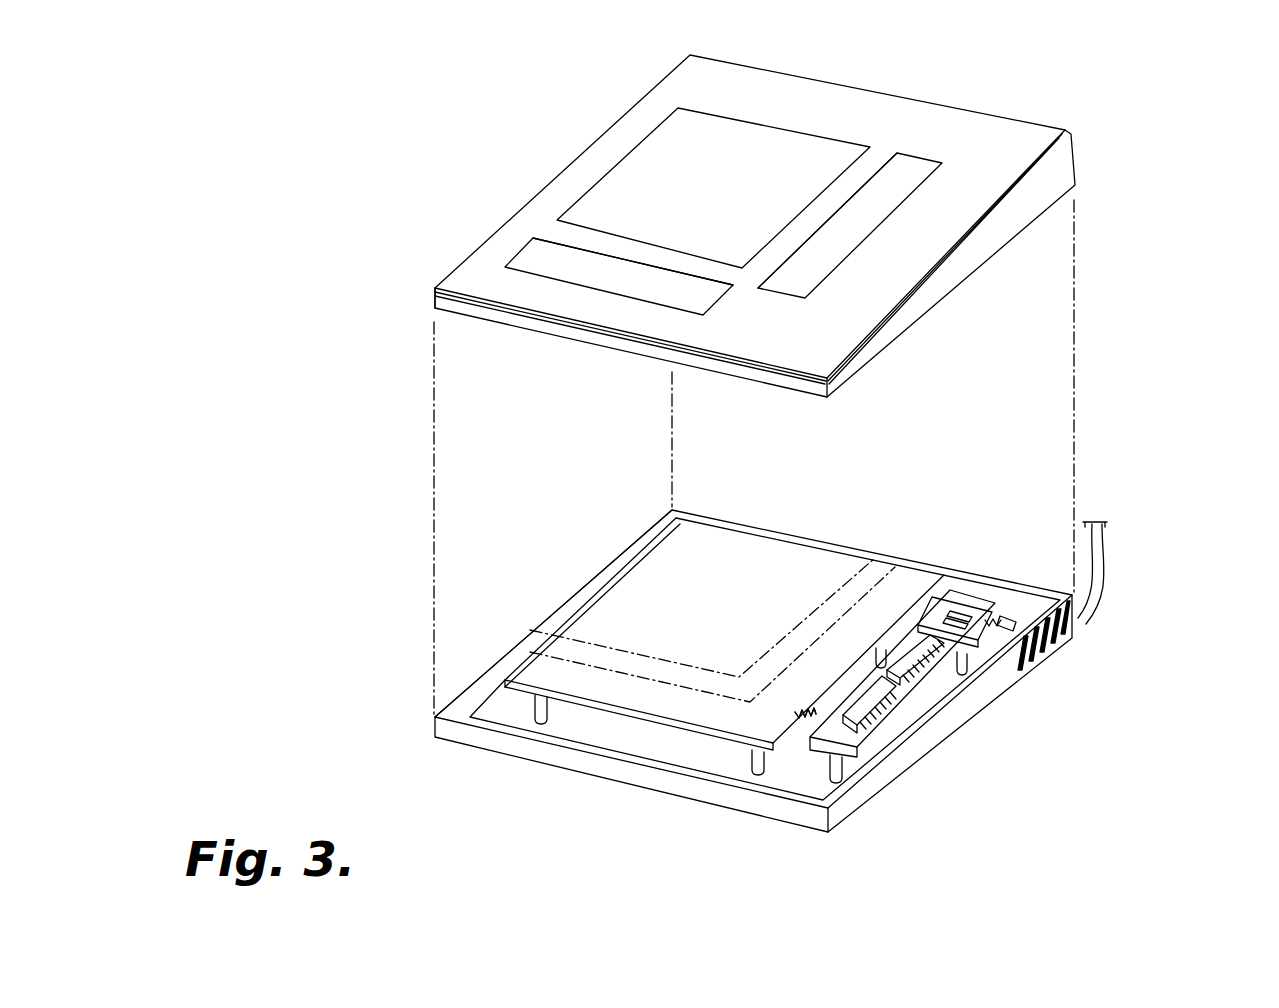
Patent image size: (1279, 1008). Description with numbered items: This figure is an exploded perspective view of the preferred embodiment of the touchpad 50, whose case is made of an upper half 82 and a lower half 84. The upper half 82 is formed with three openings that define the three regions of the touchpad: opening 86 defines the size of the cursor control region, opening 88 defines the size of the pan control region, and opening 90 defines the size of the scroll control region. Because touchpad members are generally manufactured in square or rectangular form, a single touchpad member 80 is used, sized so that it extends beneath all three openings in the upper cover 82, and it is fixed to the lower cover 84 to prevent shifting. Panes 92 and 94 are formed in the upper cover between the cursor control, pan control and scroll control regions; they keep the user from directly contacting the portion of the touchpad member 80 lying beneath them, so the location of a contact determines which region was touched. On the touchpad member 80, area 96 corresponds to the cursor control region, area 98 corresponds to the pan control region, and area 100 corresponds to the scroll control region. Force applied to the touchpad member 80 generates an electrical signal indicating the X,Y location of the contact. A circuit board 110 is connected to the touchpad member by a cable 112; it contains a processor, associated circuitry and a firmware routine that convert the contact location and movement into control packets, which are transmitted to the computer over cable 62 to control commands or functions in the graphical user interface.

The touchpad 50 is at (1174, 153).
The upper half 82 is at (1027, 132).
The lower half 84 is at (987, 572).
The opening 86 is at (637, 167).
The opening 88 is at (532, 255).
The opening 90 is at (905, 165).
The pane 92 is at (555, 232).
The pane 94 is at (875, 158).
The touchpad member 80 is at (765, 543).
The area 96 is at (623, 593).
The area 98 is at (552, 670).
The area 100 is at (920, 558).
The circuit board 110 is at (968, 682).
The cable 112 is at (800, 718).
The cable 62 is at (1102, 572).